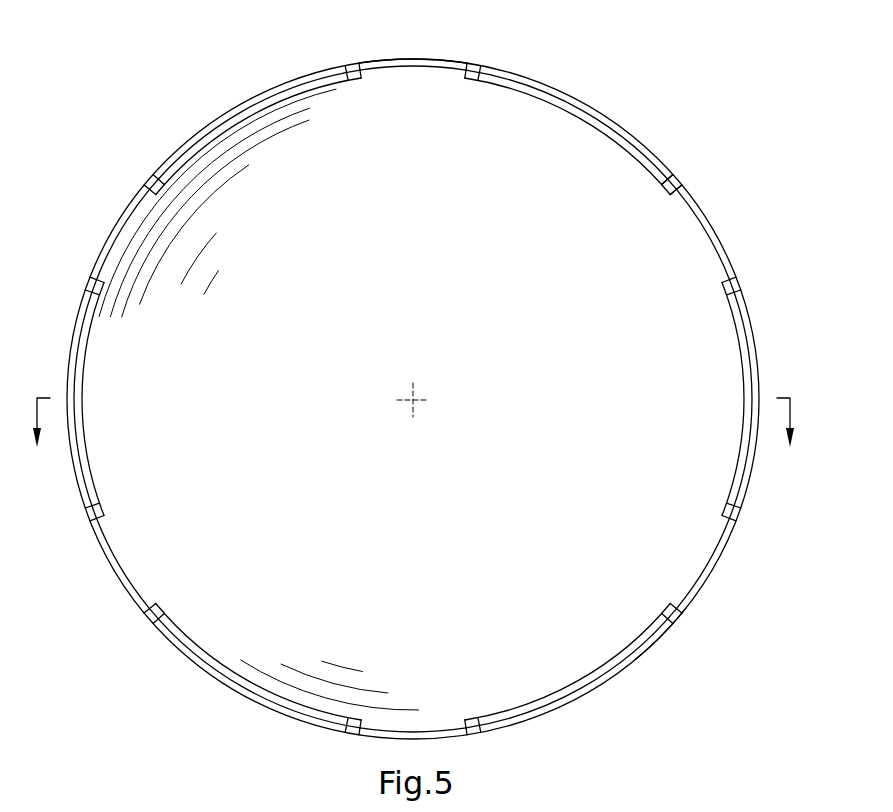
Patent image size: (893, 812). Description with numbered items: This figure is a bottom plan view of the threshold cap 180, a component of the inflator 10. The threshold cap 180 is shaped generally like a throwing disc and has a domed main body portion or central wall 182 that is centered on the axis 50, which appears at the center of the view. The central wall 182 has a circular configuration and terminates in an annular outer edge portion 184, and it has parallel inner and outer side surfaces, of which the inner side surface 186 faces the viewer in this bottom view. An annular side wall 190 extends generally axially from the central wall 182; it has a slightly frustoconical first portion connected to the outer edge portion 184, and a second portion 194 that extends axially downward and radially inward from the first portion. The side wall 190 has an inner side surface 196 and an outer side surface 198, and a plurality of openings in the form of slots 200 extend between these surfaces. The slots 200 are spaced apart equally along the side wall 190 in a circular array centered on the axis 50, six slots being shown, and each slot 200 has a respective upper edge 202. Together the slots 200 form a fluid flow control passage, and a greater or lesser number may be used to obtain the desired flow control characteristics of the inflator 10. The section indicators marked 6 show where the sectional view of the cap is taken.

The inflator 10 is at (716, 662).
The axis 50 is at (412, 400).
The section line 6- 6 is at (413, 434).
The threshold cap 180 is at (641, 702).
The central wall 182 is at (553, 165).
The annular outer edge portion 184 is at (612, 200).
The inner side surface 186 is at (290, 208).
The annular side wall 190 is at (749, 274).
The second portion 194 is at (750, 335).
The inner side surface 196 is at (85, 410).
The outer side surface 198 is at (68, 372).
The slots 200 is at (438, 42).
The upper edge 202 is at (399, 62).